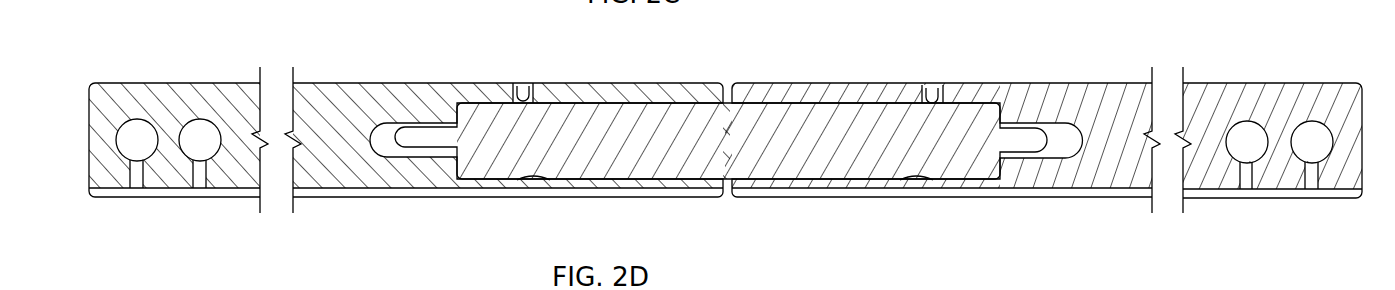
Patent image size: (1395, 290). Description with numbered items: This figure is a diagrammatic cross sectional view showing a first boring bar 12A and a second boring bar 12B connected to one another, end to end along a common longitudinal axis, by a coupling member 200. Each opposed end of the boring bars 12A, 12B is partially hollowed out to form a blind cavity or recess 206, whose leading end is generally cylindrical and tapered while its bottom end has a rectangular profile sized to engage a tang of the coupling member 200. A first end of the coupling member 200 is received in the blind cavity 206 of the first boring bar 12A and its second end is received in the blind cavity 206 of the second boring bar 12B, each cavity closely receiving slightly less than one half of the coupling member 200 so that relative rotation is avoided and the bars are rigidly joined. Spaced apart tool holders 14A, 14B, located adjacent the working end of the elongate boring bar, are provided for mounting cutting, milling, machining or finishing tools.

The first boring bar 12A is at (377, 88).
The second boring bar 12B is at (1095, 92).
The tool holder 14A is at (135, 121).
The tool holder 14B is at (205, 121).
The coupling member 200 is at (810, 120).
The blind cavity or recess 206 is at (487, 105).